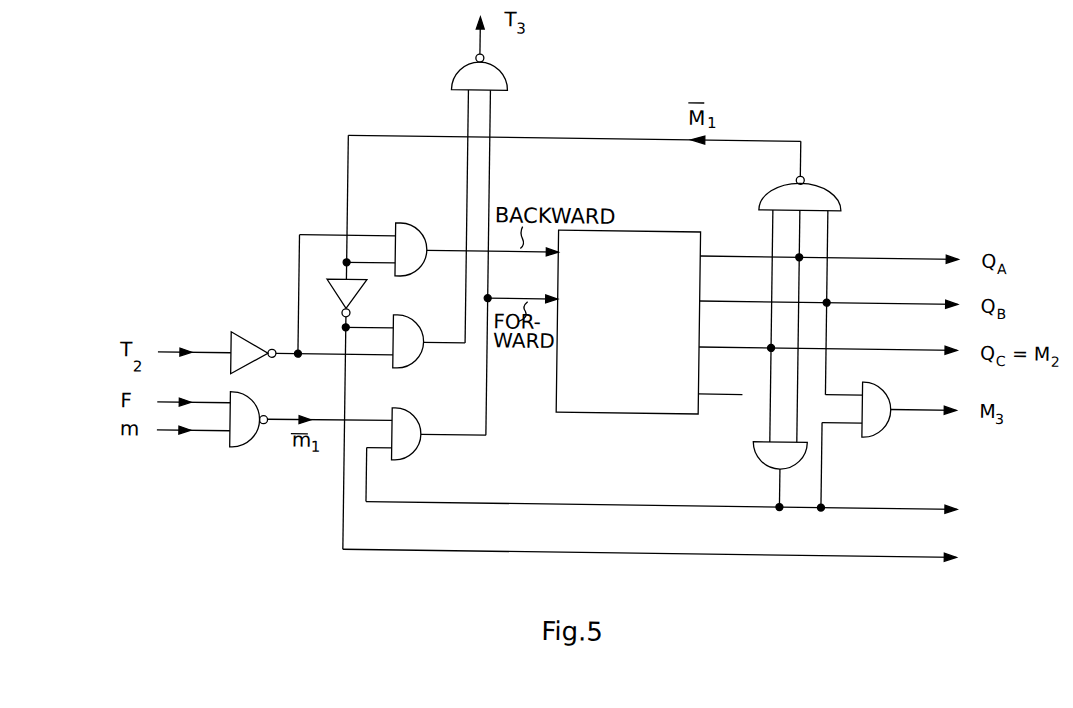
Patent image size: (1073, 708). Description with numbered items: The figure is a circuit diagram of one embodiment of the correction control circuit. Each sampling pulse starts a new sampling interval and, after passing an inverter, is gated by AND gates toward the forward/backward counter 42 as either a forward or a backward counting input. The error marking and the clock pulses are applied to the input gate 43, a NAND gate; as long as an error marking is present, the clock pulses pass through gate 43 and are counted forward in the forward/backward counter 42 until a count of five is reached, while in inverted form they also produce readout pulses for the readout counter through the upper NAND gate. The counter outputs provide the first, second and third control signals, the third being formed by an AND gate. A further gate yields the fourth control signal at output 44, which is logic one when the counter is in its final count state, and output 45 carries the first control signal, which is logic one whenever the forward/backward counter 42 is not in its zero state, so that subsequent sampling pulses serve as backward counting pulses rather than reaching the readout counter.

The forward/backward counter 42 is at (628, 322).
The input gate 43 is at (212, 435).
The output M4 of the forward/backward counter 44 is at (690, 500).
The output M1 of the forward/backward counter 45 is at (674, 570).